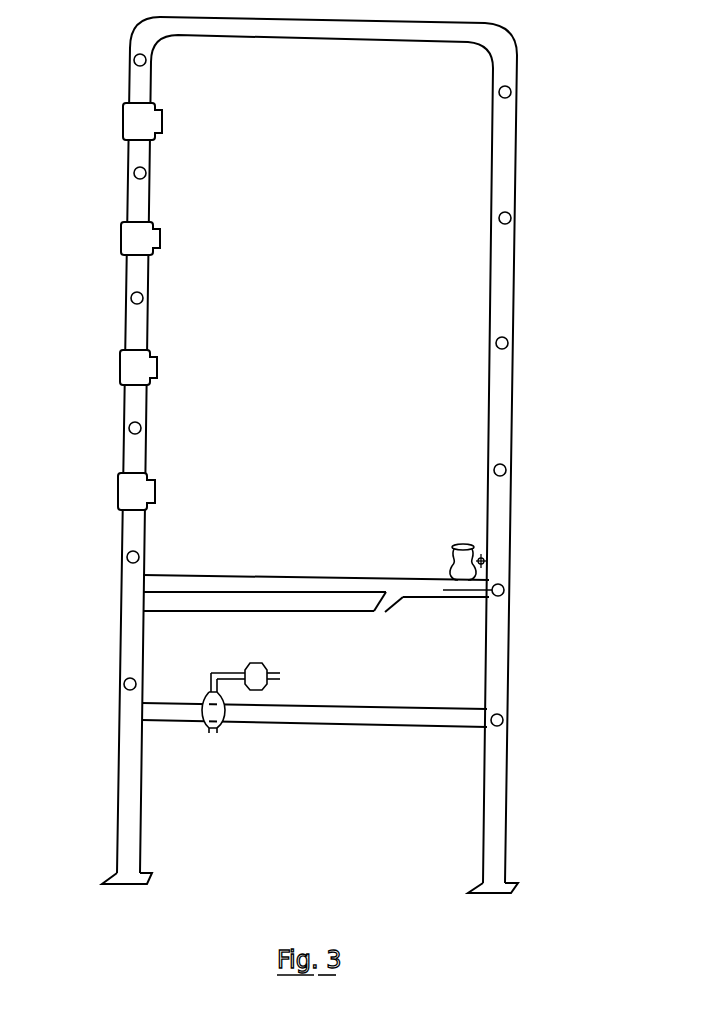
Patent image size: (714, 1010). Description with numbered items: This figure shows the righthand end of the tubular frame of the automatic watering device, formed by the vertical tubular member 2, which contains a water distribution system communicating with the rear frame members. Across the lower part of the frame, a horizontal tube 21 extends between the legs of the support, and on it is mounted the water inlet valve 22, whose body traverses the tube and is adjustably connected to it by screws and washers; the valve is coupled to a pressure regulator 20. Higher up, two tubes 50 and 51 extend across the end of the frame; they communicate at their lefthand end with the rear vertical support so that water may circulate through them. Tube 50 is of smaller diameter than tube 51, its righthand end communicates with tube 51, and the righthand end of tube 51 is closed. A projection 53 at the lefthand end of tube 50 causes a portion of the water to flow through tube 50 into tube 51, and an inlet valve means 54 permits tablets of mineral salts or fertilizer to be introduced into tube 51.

The vertical tubular member 2 is at (312, 36).
The projection 53 is at (143, 600).
The tube 50 is at (380, 613).
The tube 51 is at (504, 590).
The inlet valve means 54 is at (486, 565).
The horizontal tube 21 is at (410, 713).
The water inlet valve 22 is at (210, 715).
The pressure regulator 20 is at (212, 676).